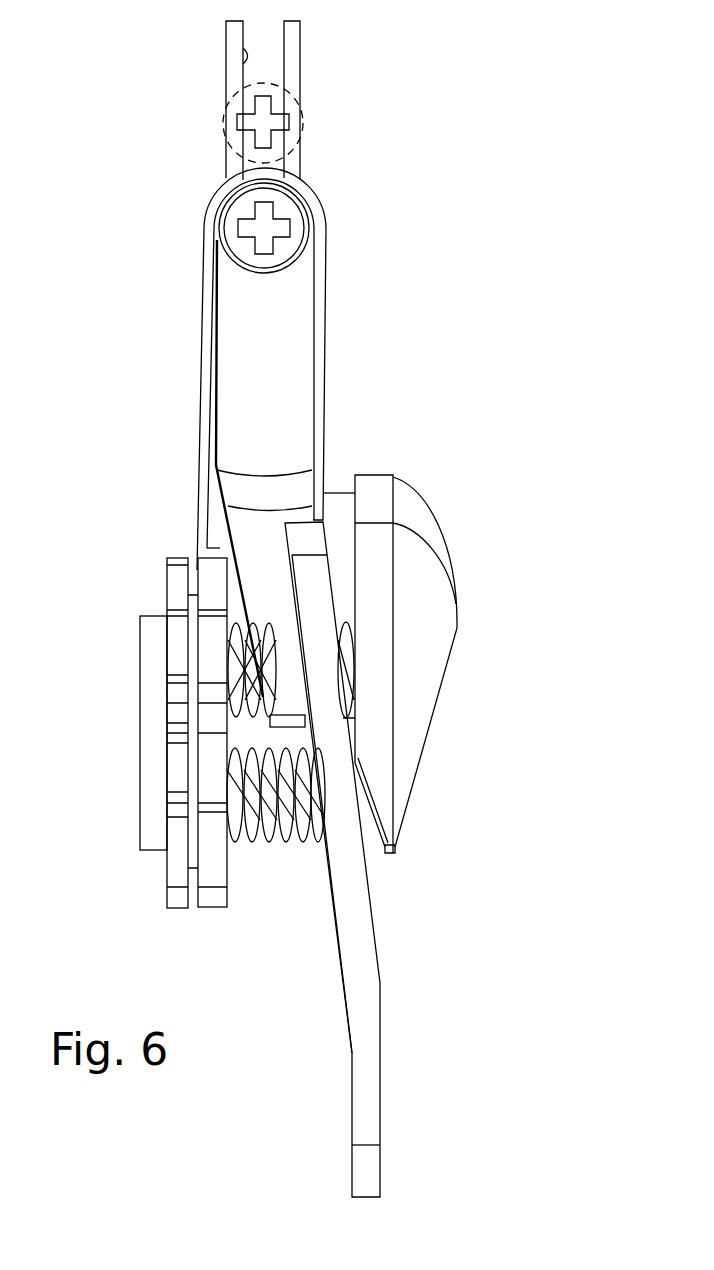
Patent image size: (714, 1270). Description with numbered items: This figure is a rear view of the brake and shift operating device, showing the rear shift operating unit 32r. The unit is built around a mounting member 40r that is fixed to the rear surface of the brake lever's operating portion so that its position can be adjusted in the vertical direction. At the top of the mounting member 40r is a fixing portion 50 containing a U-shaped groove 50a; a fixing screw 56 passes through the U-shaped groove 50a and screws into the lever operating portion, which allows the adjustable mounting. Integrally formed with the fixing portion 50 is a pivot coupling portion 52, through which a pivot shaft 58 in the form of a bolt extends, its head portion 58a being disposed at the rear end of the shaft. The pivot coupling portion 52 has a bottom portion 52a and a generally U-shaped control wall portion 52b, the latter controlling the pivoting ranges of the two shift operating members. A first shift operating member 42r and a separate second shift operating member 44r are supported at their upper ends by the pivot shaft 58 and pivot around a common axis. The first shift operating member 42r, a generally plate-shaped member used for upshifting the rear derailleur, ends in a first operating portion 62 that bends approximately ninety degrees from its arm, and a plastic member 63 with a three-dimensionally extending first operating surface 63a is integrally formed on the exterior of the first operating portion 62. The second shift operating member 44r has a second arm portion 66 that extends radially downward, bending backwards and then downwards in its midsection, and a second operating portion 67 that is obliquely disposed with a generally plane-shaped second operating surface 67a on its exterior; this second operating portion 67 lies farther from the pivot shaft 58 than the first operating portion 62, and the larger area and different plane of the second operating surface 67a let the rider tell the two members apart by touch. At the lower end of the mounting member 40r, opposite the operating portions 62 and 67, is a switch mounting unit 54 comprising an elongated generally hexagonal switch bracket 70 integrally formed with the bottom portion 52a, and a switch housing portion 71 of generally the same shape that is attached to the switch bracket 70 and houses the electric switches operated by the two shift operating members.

The mounting member 40r is at (373, 166).
The fixing portion 50 is at (305, 66).
The U-shaped groove 50a is at (238, 48).
The fixing screw 56 is at (300, 97).
The pivot coupling portion 52 is at (341, 276).
The bottom portion 52a is at (221, 468).
The control wall portion 52b is at (318, 333).
The pivot shaft 58 is at (218, 213).
The head portion 58a is at (247, 245).
The second arm portion 66 is at (290, 395).
The rear shift operating unit 32r is at (491, 417).
The first operating portion 62 is at (381, 492).
The first shift operating member 42r is at (464, 548).
The plastic member 63 is at (436, 643).
The first operating surface 63a is at (447, 690).
The second shift operating member 44r is at (393, 917).
The second operating portion 67 is at (381, 967).
The second operating surface 67a is at (381, 1088).
The switch mounting unit 54 is at (191, 554).
The switch bracket 70 is at (220, 897).
The switch housing portion 71 is at (175, 871).